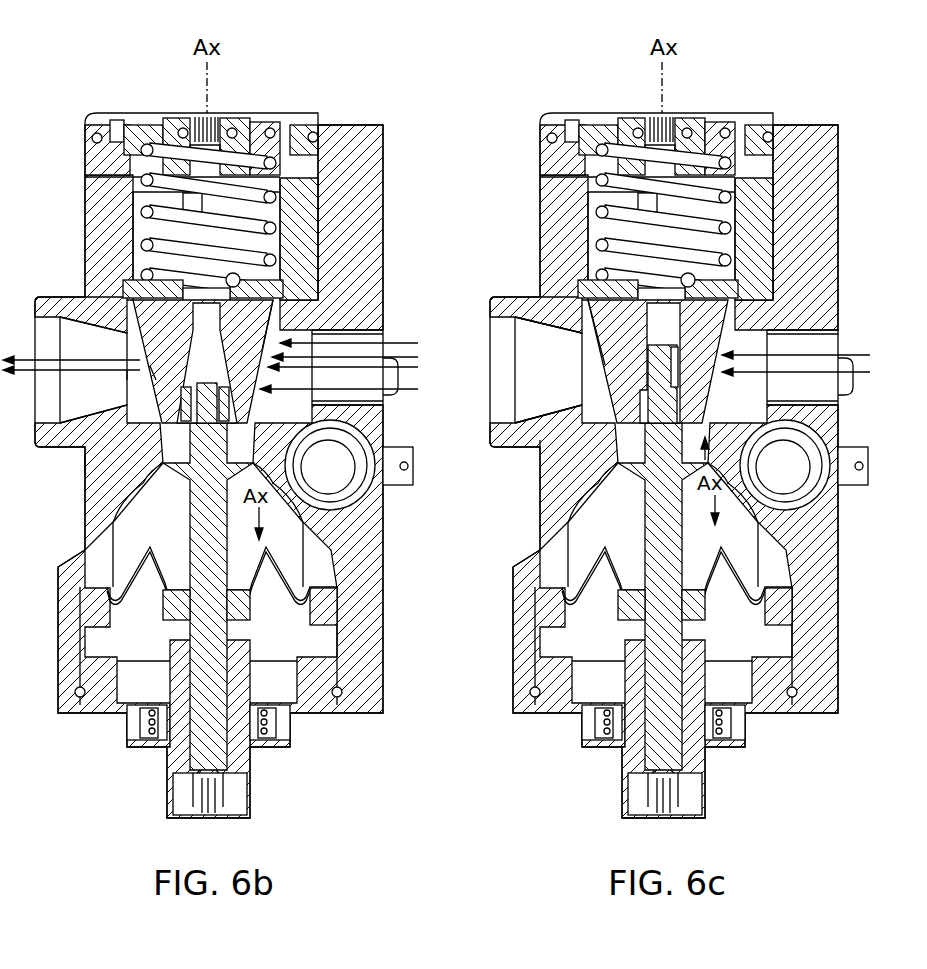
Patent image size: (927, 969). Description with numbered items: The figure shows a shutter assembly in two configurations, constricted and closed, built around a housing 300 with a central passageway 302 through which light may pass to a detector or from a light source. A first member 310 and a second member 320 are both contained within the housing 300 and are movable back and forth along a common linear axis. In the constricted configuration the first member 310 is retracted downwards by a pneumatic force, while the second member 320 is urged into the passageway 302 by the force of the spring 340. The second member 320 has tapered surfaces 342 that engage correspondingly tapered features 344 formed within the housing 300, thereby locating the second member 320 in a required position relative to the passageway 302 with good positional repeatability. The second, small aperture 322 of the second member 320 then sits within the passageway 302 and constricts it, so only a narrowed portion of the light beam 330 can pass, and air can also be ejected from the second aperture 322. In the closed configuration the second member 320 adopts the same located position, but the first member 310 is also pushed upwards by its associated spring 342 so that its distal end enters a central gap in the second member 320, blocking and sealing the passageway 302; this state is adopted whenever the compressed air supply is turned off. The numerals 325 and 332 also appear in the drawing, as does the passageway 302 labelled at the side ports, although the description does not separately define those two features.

In FIG. 6b, the housing 300 is at (384, 172).
In FIG. 6c, the housing 300 is at (700, 465).
In FIG. 6b, the spring 340 is at (248, 222).
In FIG. 6c, the spring 340 is at (753, 219).
In FIG. 6b, the light beam 330 is at (412, 342).
In FIG. 6c, the light beam 330 is at (814, 353).
In FIG. 6b, the central passageway 302 is at (111, 355).
In FIG. 6c, the central passageway 302 is at (669, 370).
In FIG. 6b, the second (small) aperture 322 is at (300, 355).
In FIG. 6c, the second (small) aperture 322 is at (518, 334).
In FIG. 6b, the first member 310 is at (150, 475).
In FIG. 6c, the first member 310 is at (610, 521).
In FIG. 6c, the inlet port flange 325 is at (502, 461).
In FIG. 6b, the tapered features 344 is at (86, 466).
In FIG. 6b, the tapered surfaces 342 is at (165, 732).
In FIG. 6c, the tapered surfaces 342 is at (663, 681).
In FIG. 6b, the sealing surface 332 is at (150, 366).
In FIG. 6b, the second member 320 is at (133, 375).